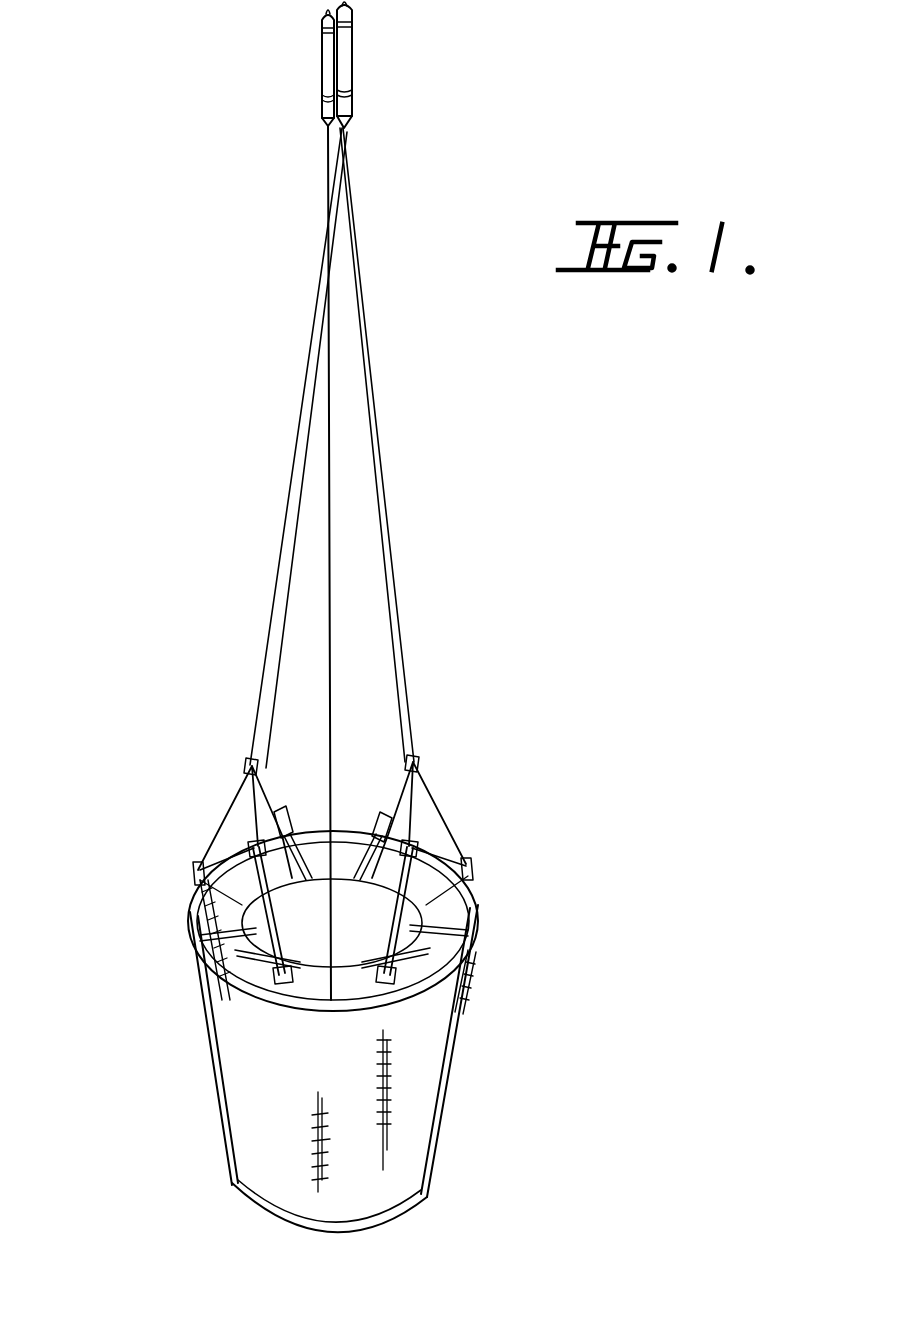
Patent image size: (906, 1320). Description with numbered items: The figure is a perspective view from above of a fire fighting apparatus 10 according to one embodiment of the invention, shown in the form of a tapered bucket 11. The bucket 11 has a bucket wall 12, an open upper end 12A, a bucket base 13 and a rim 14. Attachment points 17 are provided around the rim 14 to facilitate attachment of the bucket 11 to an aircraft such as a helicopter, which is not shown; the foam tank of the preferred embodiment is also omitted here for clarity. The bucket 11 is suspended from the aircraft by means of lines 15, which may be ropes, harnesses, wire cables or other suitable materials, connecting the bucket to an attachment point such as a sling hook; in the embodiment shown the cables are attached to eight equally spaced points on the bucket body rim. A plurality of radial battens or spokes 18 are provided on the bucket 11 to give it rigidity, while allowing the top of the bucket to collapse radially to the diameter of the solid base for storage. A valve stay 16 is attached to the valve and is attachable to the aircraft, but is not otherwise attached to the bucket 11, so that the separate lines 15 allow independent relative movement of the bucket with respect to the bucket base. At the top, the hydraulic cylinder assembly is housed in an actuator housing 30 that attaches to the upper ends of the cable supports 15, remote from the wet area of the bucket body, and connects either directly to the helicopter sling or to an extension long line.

The fire fighting apparatus 10 is at (177, 750).
The actuator housing 30 is at (322, 60).
The valve stay 16 is at (330, 576).
The lines 15 is at (298, 484).
The rim 14 is at (192, 905).
The radial battens or spokes 18 is at (205, 990).
The attachment points 17 is at (480, 945).
The bucket wall 12 is at (420, 1125).
The open upper end 12A is at (338, 900).
The tapered bucket 11 is at (236, 1134).
The bucket base 13 is at (270, 1225).